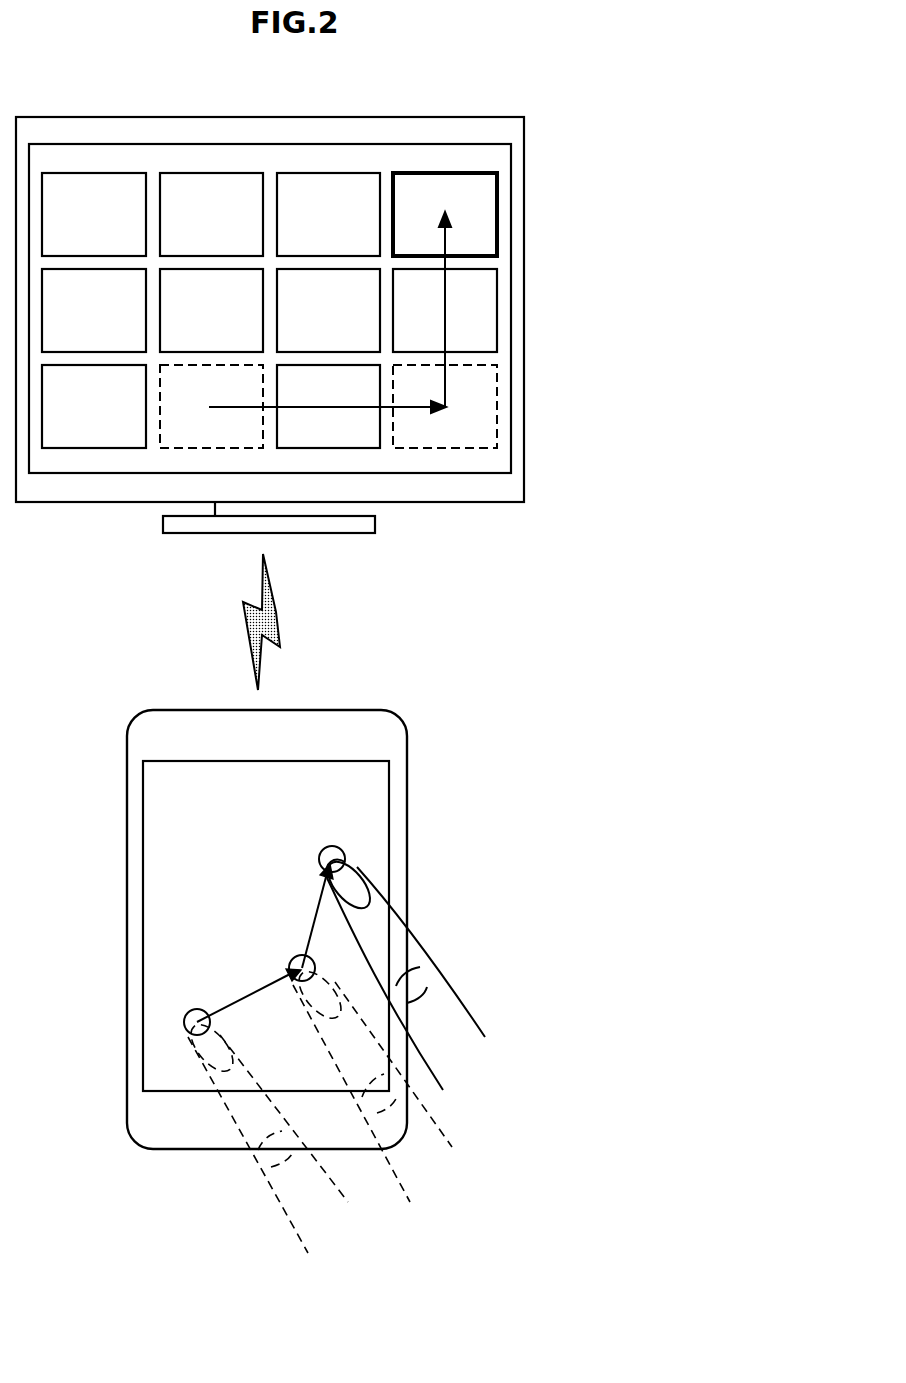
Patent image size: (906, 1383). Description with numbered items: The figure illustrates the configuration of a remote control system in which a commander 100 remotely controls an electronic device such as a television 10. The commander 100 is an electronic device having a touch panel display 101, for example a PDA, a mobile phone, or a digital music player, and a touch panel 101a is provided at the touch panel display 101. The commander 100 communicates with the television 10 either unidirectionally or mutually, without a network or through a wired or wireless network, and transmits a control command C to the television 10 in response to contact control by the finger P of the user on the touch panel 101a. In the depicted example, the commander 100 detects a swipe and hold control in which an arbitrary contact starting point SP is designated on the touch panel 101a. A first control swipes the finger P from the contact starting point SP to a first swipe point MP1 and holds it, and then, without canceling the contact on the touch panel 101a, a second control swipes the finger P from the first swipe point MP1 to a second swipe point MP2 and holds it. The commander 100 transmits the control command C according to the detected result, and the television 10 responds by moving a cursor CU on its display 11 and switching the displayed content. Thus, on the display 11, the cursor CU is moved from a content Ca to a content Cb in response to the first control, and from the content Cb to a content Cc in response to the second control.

The television 10 is at (440, 117).
The display 11 is at (512, 152).
The content Cc is at (467, 208).
The cursor CU is at (500, 241).
The content Cb is at (473, 424).
The content Ca is at (178, 432).
The control command C is at (278, 620).
The commander 100 is at (366, 710).
The touch panel display 101 is at (351, 926).
The touch panel 101a is at (390, 803).
The contact starting point SP is at (184, 1020).
The first swipe point MP1 is at (290, 960).
The second swipe point MP2 is at (343, 853).
The finger P is at (472, 1018).